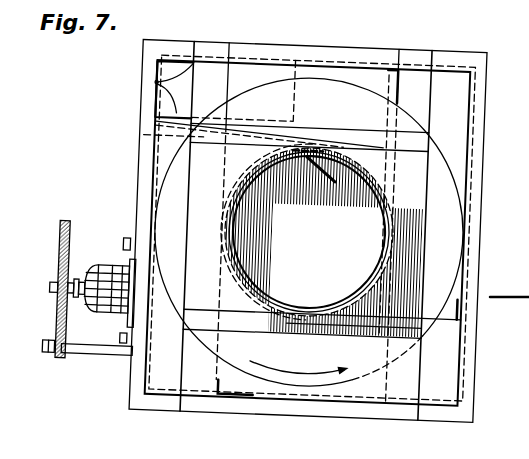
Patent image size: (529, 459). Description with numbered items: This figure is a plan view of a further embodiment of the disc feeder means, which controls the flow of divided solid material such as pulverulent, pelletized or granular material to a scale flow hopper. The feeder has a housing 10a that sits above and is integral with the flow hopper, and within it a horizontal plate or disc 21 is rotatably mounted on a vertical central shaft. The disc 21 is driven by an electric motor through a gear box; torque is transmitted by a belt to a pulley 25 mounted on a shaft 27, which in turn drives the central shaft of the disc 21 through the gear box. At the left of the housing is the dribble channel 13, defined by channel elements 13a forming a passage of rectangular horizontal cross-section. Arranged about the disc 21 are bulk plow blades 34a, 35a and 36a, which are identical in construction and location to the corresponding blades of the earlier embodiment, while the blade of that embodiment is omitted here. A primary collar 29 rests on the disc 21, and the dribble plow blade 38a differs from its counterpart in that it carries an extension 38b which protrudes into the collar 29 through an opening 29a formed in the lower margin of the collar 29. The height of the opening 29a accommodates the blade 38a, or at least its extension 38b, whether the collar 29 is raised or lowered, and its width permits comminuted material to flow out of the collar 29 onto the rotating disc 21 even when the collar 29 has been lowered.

The housing 10a is at (462, 263).
The disc 21 is at (443, 193).
The collar 29 is at (252, 167).
The opening 29a is at (356, 160).
The extension 38b is at (311, 163).
The dribble plow blade 38a is at (147, 135).
The dribble channel 13 is at (157, 100).
The channel elements 13a is at (157, 82).
The bulk plow blade 36a is at (383, 83).
The bulk plow blade 35a is at (428, 322).
The bulk plow blade 34a is at (222, 380).
The pulley 25 is at (60, 233).
The shaft 27 is at (50, 290).